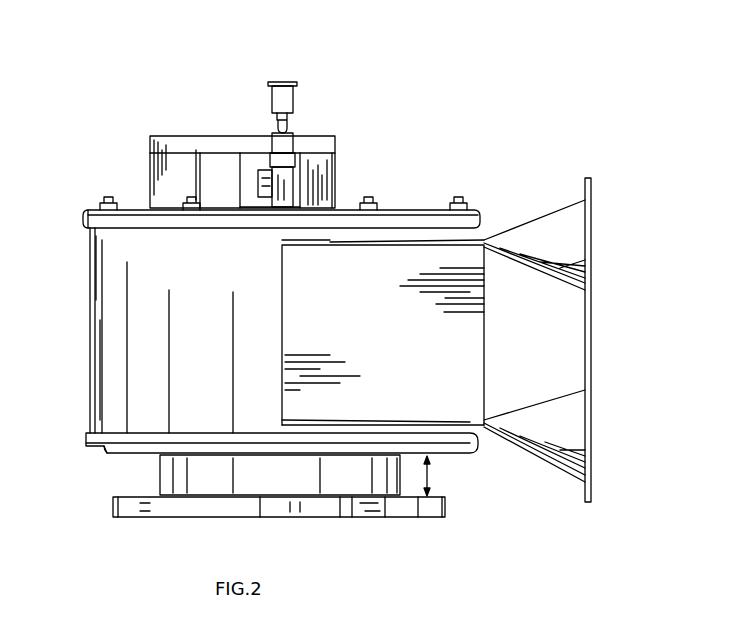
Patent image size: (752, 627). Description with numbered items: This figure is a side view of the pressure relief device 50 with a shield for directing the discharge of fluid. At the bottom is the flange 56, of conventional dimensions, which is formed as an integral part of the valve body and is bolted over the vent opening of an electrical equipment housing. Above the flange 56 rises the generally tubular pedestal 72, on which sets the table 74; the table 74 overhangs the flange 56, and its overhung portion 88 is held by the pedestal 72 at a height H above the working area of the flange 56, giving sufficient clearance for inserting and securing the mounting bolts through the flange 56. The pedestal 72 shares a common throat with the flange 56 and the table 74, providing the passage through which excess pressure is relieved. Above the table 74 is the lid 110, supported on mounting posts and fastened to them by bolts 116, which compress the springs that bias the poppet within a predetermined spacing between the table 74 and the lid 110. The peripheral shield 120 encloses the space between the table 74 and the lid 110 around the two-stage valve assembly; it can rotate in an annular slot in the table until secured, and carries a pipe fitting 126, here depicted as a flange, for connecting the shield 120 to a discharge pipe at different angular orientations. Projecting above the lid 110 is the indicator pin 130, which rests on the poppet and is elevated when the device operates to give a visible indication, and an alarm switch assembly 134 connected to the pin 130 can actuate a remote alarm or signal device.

The pressure relief device 50 is at (478, 130).
The flange 56 is at (400, 508).
The pedestal 72 is at (160, 472).
The table 74 is at (88, 433).
The overhung portion 88 is at (105, 453).
The lid 110 is at (398, 210).
The bolts 116 is at (103, 197).
The peripheral shield 120 is at (107, 333).
The pipe fitting 126 is at (592, 237).
The indicator pin 130 is at (275, 95).
The alarm switch assembly 134 is at (168, 140).
The height H is at (427, 476).